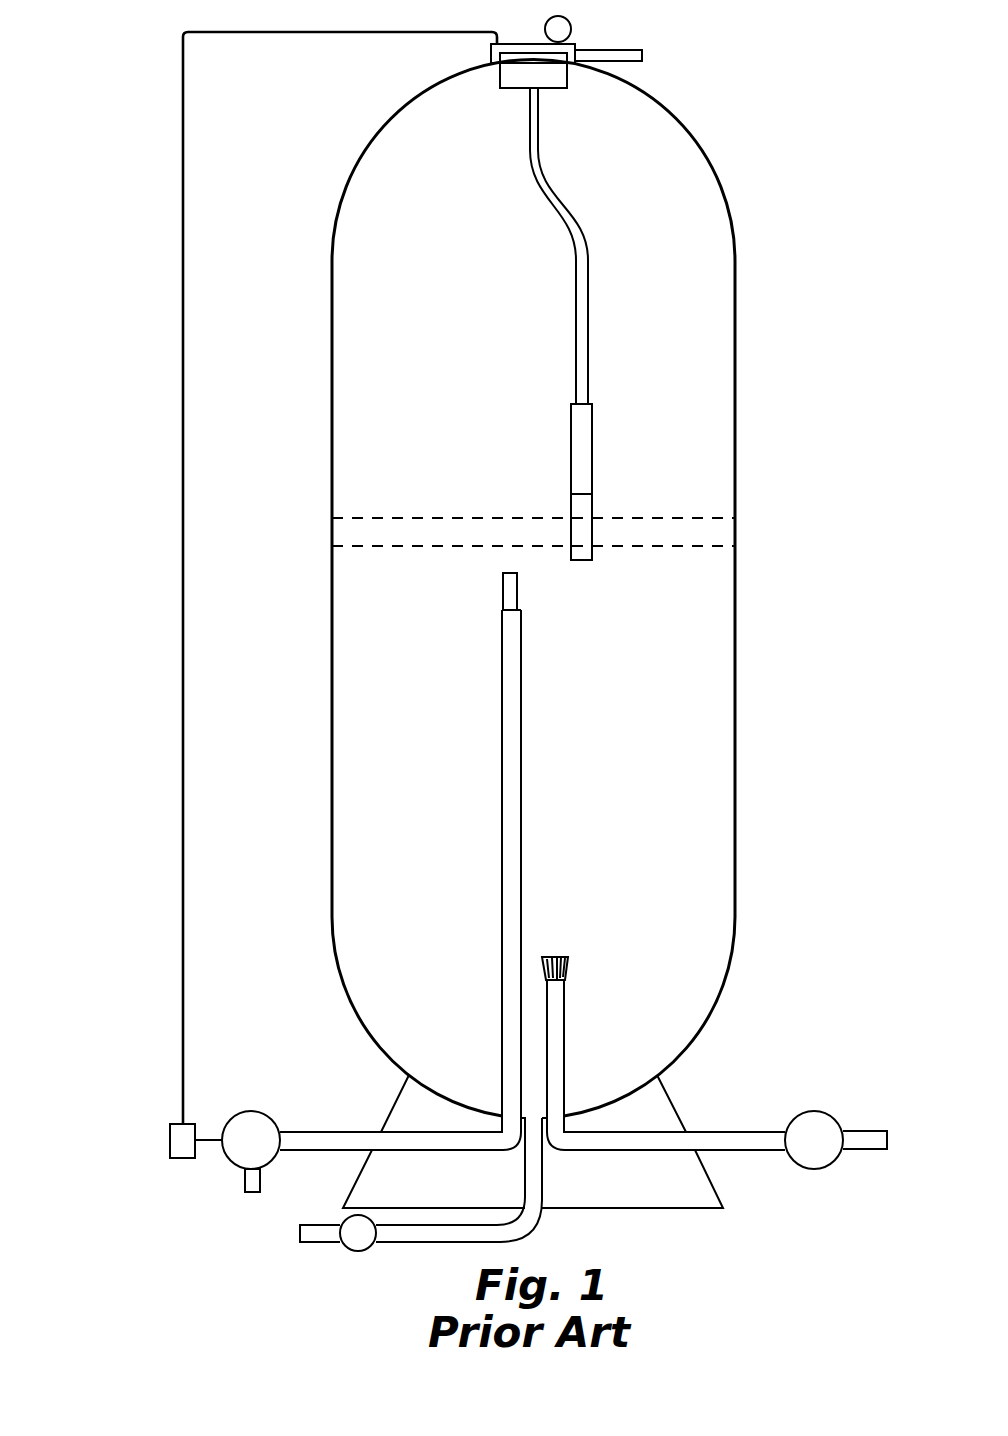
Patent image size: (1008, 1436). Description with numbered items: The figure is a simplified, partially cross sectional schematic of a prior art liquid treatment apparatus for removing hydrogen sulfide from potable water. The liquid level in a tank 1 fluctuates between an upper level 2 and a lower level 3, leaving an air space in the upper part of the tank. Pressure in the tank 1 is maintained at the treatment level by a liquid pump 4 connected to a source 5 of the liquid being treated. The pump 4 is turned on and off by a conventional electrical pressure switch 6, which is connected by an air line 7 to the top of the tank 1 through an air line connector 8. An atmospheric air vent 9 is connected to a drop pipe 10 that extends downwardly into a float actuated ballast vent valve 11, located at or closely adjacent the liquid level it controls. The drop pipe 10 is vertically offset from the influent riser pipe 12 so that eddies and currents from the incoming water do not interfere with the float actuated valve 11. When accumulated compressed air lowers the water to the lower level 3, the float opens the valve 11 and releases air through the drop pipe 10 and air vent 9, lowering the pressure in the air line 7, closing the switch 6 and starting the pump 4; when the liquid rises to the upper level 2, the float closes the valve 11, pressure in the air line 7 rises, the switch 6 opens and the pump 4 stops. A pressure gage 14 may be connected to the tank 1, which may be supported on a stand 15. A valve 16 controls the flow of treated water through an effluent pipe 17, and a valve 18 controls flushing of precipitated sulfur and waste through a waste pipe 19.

The tank 1 is at (725, 192).
The upper level 2 is at (699, 518).
The lower level 3 is at (692, 546).
The liquid pump 4 is at (262, 1110).
The source 5 is at (245, 1192).
The electrical pressure switch 6 is at (170, 1135).
The air line 7 is at (183, 90).
The air line connector 8 is at (491, 52).
The atmospheric air vent 9 is at (583, 63).
The drop pipe 10 is at (575, 195).
The float actuated ballast vent valve 11 is at (592, 448).
The influent riser pipe 12 is at (521, 722).
The pressure gage 14 is at (571, 25).
The stand 15 is at (680, 1110).
The valve 16 is at (815, 1169).
The effluent pipe 17 is at (877, 1131).
The valve 18 is at (358, 1251).
The waste pipe 19 is at (318, 1243).